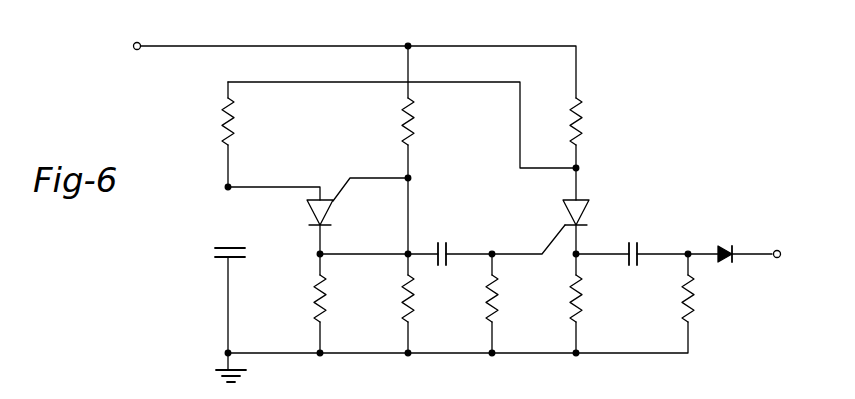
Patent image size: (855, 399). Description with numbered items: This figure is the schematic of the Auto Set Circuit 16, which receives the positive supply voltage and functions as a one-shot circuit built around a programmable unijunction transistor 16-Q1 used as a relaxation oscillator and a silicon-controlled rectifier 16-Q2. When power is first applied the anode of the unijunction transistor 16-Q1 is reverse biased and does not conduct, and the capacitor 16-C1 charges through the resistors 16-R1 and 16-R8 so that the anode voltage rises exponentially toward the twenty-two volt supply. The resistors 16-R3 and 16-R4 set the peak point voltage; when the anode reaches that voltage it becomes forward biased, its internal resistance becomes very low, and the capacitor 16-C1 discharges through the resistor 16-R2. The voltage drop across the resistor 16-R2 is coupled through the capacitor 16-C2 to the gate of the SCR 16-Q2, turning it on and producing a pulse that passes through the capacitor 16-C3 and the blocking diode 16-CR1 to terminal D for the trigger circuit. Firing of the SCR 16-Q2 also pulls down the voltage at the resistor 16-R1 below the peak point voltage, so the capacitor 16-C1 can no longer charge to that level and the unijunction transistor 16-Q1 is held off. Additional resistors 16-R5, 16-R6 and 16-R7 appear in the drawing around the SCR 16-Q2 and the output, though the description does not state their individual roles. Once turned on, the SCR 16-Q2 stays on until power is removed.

The Auto Set Circuit 16 is at (609, 27).
The resistor 16-R1 is at (234, 121).
The resistor 16-R2 is at (320, 298).
The resistor 16-R3 is at (409, 121).
The resistor 16-R4 is at (412, 298).
The resistor R5 1K 16-R5 is at (490, 298).
The resistor R6 470 16-R6 is at (575, 298).
The resistor R7 2K 16-R7 is at (687, 298).
The resistor 16-R8 is at (579, 121).
The capacitor 16-C1 is at (202, 252).
The capacitor 16-C2 is at (443, 249).
The capacitor 16-C3 is at (633, 254).
The programmable unijunction transistor 16-Q1 is at (335, 193).
The SCR 16-Q2 is at (609, 203).
The blocking diode 16-CR1 is at (726, 241).